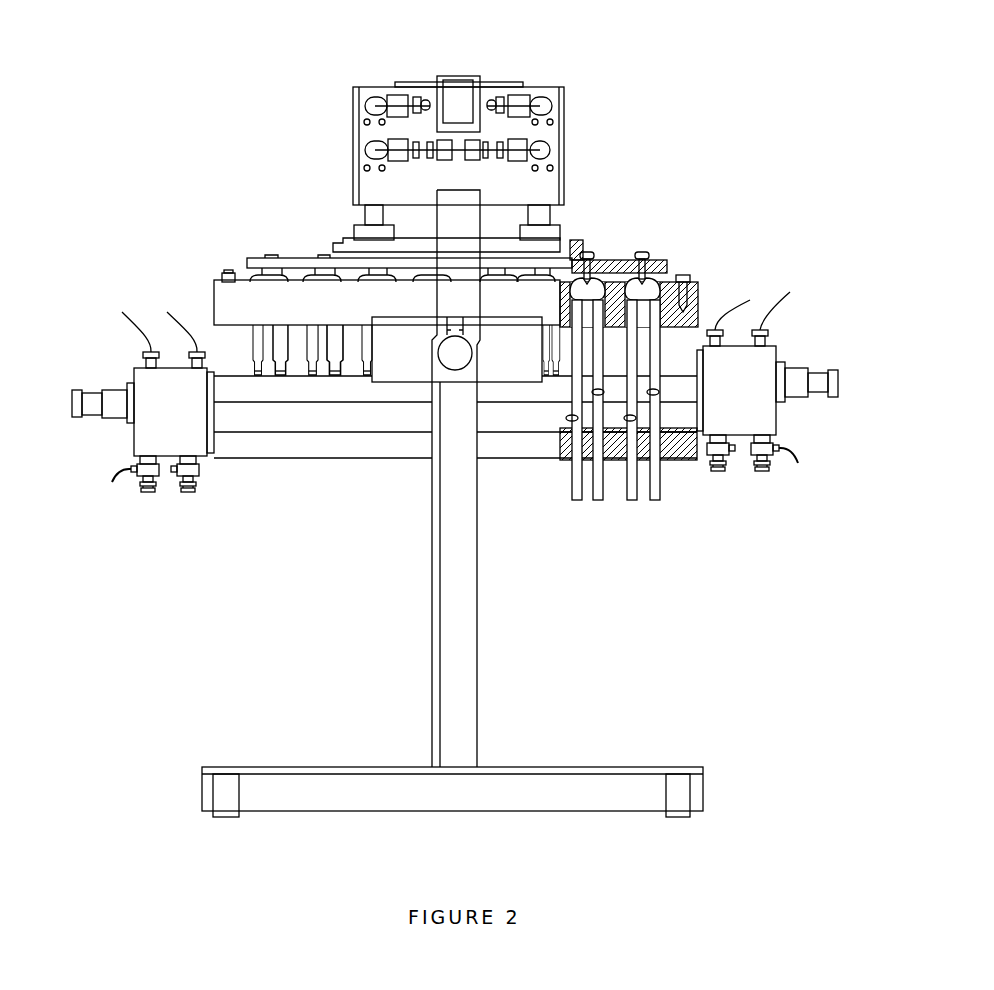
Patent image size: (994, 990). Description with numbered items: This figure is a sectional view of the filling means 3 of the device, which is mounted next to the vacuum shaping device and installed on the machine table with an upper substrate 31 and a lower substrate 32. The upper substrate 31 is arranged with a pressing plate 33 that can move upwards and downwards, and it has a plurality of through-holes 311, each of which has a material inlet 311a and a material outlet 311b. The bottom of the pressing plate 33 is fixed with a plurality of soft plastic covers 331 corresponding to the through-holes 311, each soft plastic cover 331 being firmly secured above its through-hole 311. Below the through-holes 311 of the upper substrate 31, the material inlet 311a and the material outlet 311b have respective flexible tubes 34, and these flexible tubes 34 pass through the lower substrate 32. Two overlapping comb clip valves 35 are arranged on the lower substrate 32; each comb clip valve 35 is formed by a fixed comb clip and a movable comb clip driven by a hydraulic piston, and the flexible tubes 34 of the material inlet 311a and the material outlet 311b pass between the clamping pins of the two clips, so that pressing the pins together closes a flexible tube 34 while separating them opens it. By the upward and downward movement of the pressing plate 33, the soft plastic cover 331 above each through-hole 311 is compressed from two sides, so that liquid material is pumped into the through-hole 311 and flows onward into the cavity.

The filling means 3 is at (591, 190).
The upper substrate 31 is at (257, 300).
The through-hole 311 is at (707, 300).
The material inlet 311a is at (745, 300).
The material outlet 311b is at (720, 300).
The lower substrate 32 is at (294, 449).
The pressing plate 33 is at (618, 262).
The soft plastic cover 331 is at (659, 282).
The flexible tube 34 is at (655, 412).
The comb clip valve 35 is at (227, 387).